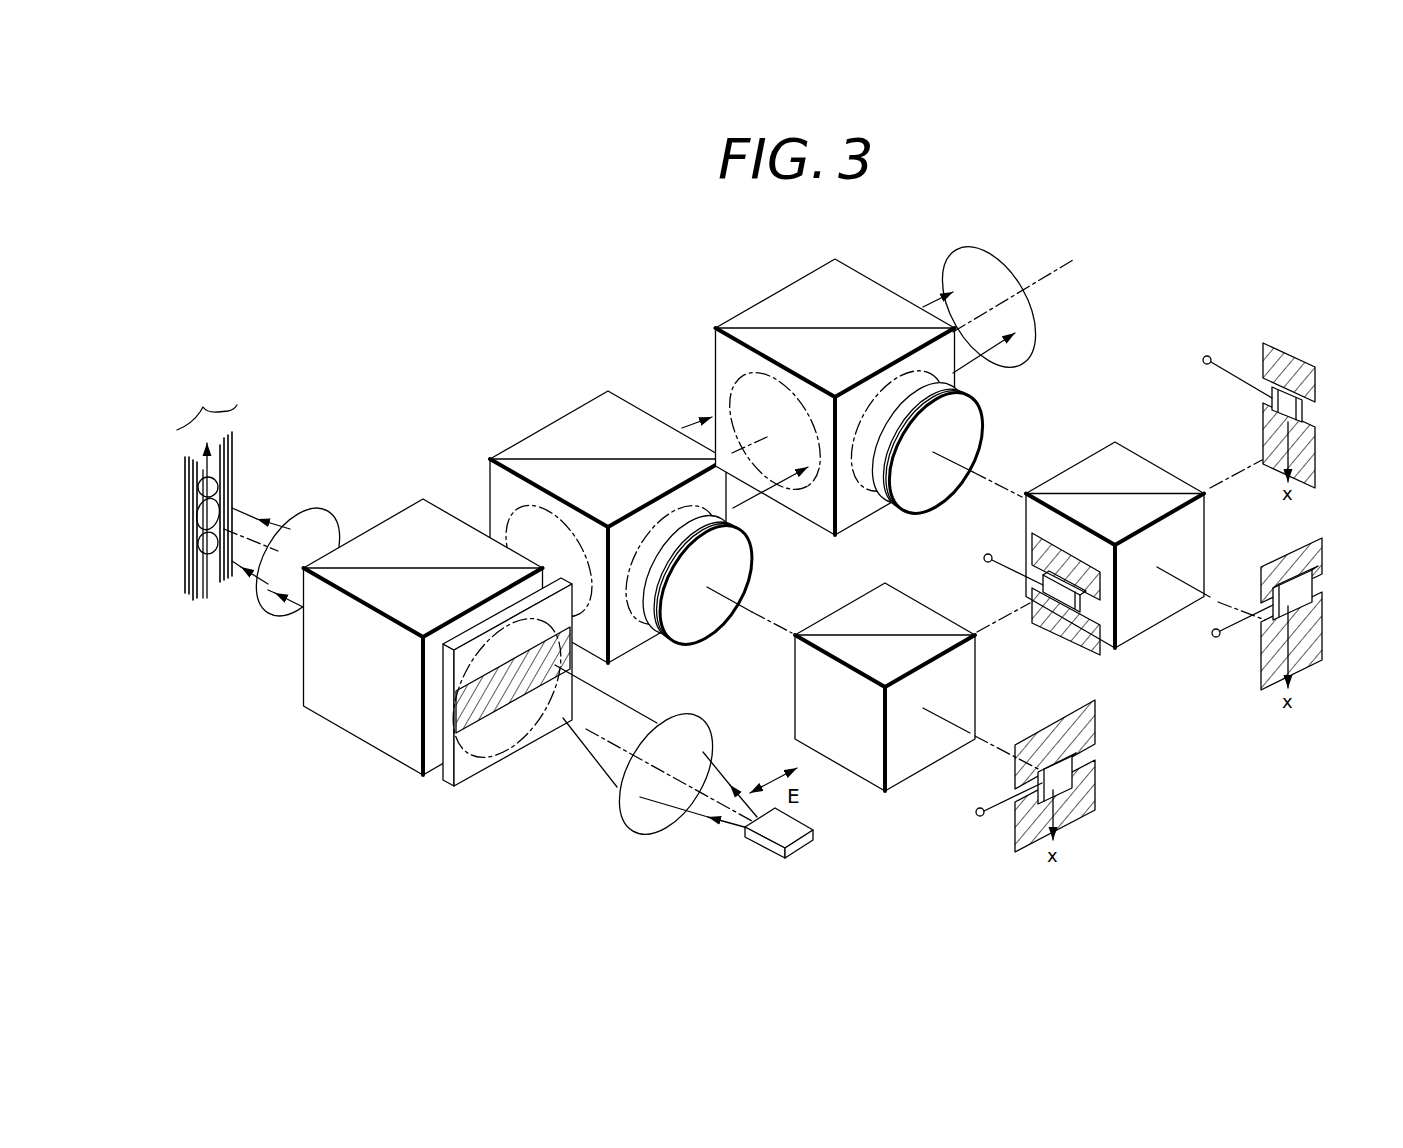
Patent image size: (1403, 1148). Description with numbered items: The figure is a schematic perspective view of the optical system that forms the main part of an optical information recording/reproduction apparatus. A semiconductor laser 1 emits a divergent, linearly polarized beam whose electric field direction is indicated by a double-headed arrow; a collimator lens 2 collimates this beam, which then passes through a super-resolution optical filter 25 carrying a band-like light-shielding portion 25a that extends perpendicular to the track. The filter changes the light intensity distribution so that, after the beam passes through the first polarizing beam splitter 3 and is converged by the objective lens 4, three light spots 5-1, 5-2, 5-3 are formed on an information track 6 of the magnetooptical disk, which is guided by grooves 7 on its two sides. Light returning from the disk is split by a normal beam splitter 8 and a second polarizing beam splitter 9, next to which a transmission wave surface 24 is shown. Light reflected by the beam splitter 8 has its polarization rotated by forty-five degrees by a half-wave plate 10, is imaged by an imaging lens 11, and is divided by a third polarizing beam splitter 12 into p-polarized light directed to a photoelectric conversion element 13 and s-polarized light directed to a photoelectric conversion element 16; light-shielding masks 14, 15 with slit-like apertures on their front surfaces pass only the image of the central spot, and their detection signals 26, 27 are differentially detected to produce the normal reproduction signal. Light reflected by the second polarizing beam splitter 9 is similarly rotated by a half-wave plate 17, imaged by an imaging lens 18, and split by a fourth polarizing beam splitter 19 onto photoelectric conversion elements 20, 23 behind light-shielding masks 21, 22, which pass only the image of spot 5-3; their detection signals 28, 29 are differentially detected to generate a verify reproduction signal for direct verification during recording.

The semiconductor laser 1 is at (762, 838).
The collimator lens 2 is at (632, 818).
The first polarizing beam splitter 3 is at (336, 712).
The objective lens 4 is at (276, 613).
The light spot 5-1 is at (220, 500).
The light spot 5-2 is at (219, 478).
The light spot 5-3 is at (205, 554).
The information track 6 is at (207, 489).
The grooves 7 is at (184, 474).
The beam splitter 8 is at (527, 449).
The second polarizing beam splitter 9 is at (760, 318).
The half-wave plate 10 is at (655, 607).
The imaging lens 11 is at (703, 622).
The third polarizing beam splitter 12 is at (963, 672).
The photoelectric conversion element 13 is at (1072, 772).
The light-shielding mask 14 is at (1088, 727).
The light-shielding mask 15 is at (1040, 548).
The photoelectric conversion element 16 is at (1085, 605).
The half-wave plate 17 is at (947, 385).
The imaging lens 18 is at (972, 430).
The fourth polarizing beam splitter 19 is at (1127, 463).
The photoelectric conversion element 20 is at (1308, 580).
The light-shielding mask 21 is at (1272, 566).
The light-shielding mask 22 is at (1305, 378).
The photoelectric conversion element 23 is at (1303, 410).
The transmission wave surface 24 is at (960, 262).
The super-resolution optical filter 25 is at (472, 701).
The band-like light-shielding portion 25a is at (458, 715).
The detection signal 26 is at (976, 812).
The detection signal 27 is at (984, 557).
The detection signal 28 is at (1212, 636).
The detection signal 29 is at (1204, 357).